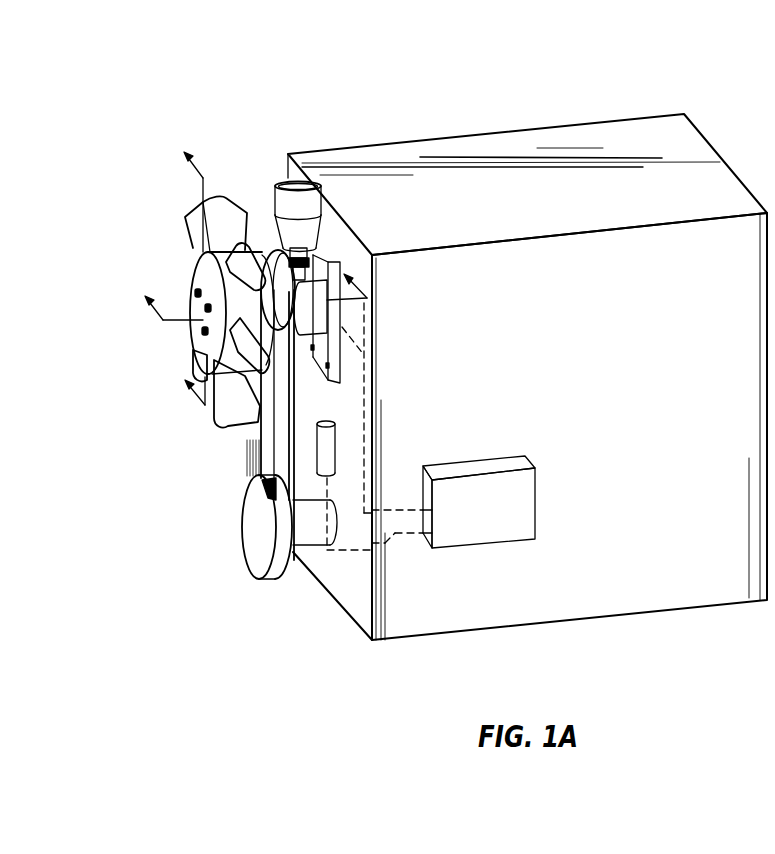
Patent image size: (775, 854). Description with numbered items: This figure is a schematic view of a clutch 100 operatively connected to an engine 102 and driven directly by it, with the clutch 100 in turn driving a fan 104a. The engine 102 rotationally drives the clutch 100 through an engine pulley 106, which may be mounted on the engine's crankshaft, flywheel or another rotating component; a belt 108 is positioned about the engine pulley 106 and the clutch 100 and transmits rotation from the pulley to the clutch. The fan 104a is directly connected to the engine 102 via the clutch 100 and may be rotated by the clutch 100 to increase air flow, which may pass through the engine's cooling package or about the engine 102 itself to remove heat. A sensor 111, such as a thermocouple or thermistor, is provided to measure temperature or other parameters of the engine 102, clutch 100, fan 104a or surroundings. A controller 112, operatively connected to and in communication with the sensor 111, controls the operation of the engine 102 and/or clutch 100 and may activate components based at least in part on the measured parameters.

The clutch 100 is at (270, 240).
The engine 102 is at (578, 122).
The fan 104a is at (193, 330).
The engine pulley 106 is at (257, 557).
The belt 108 is at (247, 448).
The sensor 111 is at (340, 443).
The controller 112 is at (508, 541).